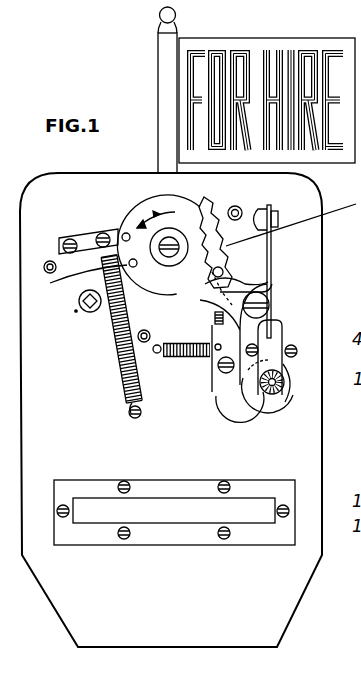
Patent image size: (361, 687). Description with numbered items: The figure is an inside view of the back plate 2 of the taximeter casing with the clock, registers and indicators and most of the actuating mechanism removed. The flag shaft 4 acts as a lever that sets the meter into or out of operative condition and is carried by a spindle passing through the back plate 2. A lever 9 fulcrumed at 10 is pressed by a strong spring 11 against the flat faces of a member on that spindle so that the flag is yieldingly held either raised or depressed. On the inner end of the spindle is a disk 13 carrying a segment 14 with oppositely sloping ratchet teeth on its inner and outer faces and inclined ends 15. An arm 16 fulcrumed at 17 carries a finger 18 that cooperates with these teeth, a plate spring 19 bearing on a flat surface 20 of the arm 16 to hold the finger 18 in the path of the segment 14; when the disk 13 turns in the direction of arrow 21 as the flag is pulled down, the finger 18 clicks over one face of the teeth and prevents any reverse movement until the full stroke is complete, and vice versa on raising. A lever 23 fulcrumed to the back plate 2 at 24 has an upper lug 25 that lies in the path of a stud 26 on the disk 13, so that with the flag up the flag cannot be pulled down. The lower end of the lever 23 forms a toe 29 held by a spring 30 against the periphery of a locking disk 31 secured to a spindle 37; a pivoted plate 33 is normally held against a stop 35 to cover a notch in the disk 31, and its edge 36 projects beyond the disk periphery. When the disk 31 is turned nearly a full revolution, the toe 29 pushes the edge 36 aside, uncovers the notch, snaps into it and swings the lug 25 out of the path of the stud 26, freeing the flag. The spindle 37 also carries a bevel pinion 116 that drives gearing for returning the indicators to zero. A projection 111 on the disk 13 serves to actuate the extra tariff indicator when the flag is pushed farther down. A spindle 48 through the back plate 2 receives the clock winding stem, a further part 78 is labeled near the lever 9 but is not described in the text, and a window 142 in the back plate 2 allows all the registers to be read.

The back plate 2 is at (171, 410).
The flag shaft 4 is at (168, 80).
The lever 9 is at (91, 244).
The fulcrum 10 is at (68, 240).
The spring 11 is at (114, 353).
The disk 13 is at (163, 203).
The segment 14 is at (266, 260).
The inclined ends 15 is at (199, 201).
The arm 16 is at (213, 302).
The fulcrum 17 is at (270, 305).
The finger 18 is at (155, 337).
The plate spring 19 is at (272, 247).
The flat surface 20 is at (272, 289).
The arrow 21 is at (161, 239).
The lever 23 is at (227, 396).
The fulcrum 24 is at (219, 370).
The lug 25 is at (226, 282).
The stud 26 is at (213, 263).
The toe 29 is at (251, 416).
The spring 30 is at (177, 356).
The locking disk 31 is at (292, 402).
The plate 33 is at (274, 398).
The stop 35 is at (248, 387).
The edge 36 is at (228, 420).
The spindle 37 is at (288, 384).
The spindle 48 is at (80, 312).
The pin 78 is at (76, 282).
The projection 111 is at (125, 233).
The bevel pinion 116 is at (290, 370).
The window 142 is at (174, 512).